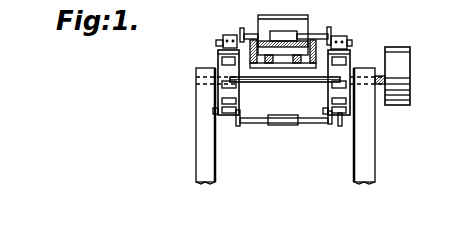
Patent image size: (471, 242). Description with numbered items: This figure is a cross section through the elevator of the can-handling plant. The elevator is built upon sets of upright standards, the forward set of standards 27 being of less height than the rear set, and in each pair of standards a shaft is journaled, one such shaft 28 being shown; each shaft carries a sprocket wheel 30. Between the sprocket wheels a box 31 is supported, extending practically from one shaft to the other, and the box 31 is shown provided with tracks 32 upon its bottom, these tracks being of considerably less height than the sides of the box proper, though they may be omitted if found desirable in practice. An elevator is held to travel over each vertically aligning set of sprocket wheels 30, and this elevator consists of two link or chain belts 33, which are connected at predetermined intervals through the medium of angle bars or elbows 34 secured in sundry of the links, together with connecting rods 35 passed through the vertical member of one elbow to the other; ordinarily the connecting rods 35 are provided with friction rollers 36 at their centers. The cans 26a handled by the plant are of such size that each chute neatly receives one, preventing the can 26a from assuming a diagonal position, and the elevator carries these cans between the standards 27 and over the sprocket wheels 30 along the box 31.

The can 26a is at (283, 41).
The forward set of standards 27 is at (200, 143).
The shaft 28 is at (390, 76).
The sprocket wheel 30 is at (219, 61).
The box 31 is at (312, 36).
The tracks 32 is at (297, 63).
The link or chain belts 33 is at (340, 126).
The angle bars or elbows 34 is at (230, 35).
The connecting rods 35 is at (246, 35).
The friction rollers 36 is at (288, 31).